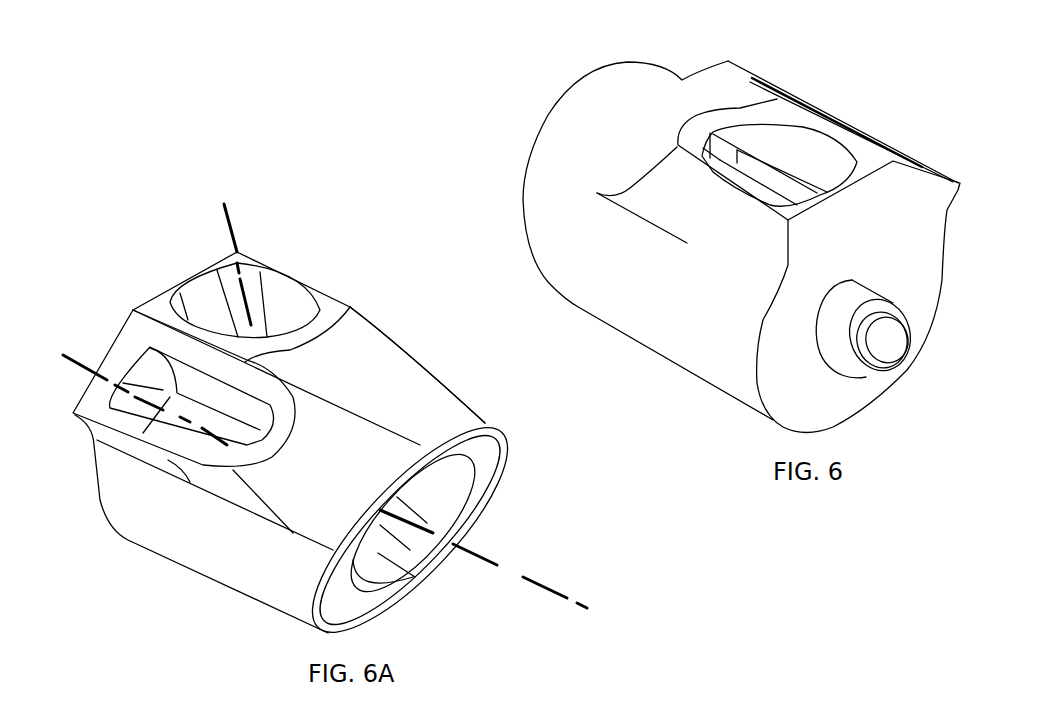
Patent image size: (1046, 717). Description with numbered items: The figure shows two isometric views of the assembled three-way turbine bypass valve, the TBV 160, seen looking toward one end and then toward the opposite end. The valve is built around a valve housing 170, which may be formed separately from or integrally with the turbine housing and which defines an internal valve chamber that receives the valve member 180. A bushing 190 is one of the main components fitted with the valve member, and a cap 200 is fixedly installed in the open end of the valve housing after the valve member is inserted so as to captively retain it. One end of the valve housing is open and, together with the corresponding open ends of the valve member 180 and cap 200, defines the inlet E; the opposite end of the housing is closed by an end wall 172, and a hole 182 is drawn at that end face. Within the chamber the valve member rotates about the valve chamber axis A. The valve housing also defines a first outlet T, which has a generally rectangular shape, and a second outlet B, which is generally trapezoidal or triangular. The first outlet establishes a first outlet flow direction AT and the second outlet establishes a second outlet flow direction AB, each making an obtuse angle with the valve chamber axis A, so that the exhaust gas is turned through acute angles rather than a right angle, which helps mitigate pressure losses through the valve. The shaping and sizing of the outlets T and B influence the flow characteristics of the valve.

In FIG. 6A, the TBV 160 is at (180, 245).
In FIG. 6, the TBV 160 is at (530, 130).
In FIG. 6A, the valve housing 170 is at (355, 347).
In FIG. 6, the valve housing 170 is at (643, 68).
In FIG. 6, the end wall 172 is at (858, 297).
In FIG. 6A, the valve member 180 is at (412, 497).
In FIG. 6, the outlet hole 182 is at (890, 350).
In FIG. 6, the bushing 190 is at (857, 298).
In FIG. 6A, the cap 200 is at (482, 463).
In FIG. 6A, the first outlet T is at (282, 306).
In FIG. 6, the first outlet T is at (837, 175).
In FIG. 6A, the second outlet B is at (105, 362).
In FIG. 6, the second outlet B is at (866, 138).
In FIG. 6A, the inlet E is at (413, 577).
In FIG. 6A, the valve chamber axis A is at (545, 588).
In FIG. 6A, the first outlet flow direction AT is at (246, 203).
In FIG. 6A, the second outlet flow direction AB is at (72, 356).